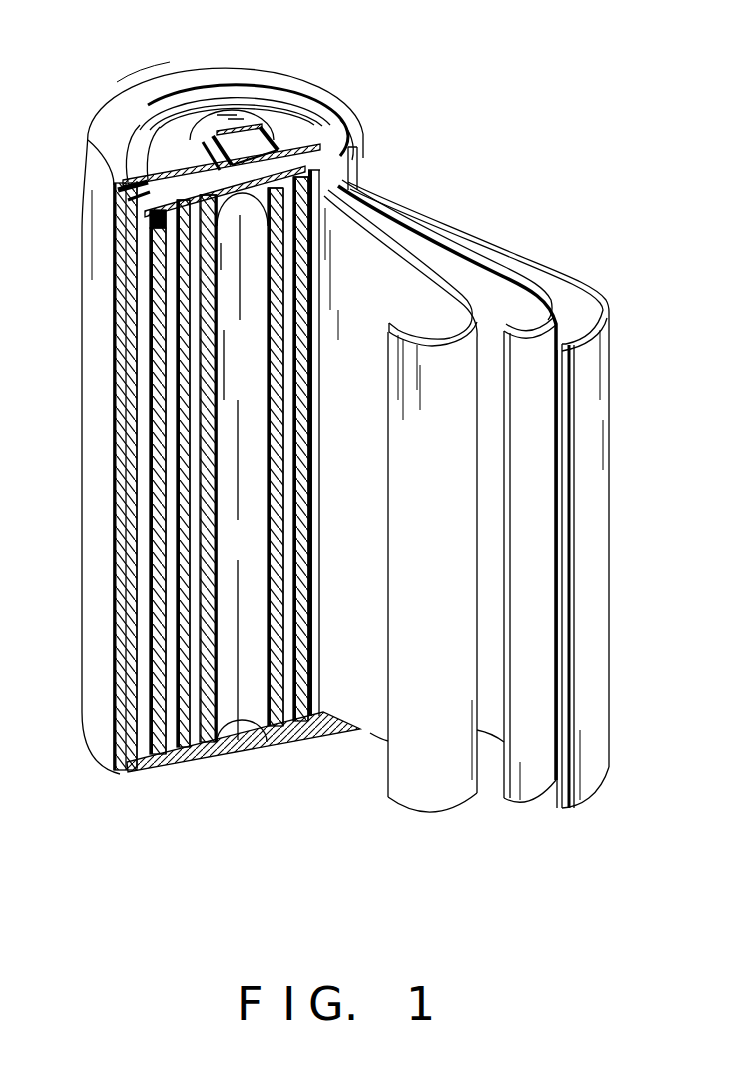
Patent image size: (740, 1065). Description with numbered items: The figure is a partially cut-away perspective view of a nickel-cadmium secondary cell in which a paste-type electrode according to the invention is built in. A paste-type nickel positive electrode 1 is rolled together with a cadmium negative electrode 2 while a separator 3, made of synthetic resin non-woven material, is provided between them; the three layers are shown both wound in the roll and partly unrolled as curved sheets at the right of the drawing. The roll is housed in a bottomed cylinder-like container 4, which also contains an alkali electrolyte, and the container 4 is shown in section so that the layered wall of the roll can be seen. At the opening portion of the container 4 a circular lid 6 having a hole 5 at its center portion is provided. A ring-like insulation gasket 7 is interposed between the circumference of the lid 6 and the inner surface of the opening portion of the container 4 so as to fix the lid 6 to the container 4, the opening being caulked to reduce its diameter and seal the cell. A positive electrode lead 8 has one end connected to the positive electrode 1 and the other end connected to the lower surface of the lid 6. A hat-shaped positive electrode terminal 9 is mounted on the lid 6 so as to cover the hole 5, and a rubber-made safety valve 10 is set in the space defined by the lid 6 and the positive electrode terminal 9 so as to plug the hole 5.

The paste-type nickel positive electrode 1 is at (431, 815).
The cadmium negative electrode 2 is at (590, 803).
The separator 3 is at (515, 803).
The bottomed cylinder-like container 4 is at (358, 158).
The hole 5 is at (290, 150).
The circular lid 6 is at (317, 140).
The ring-like insulation gasket 7 is at (353, 150).
The positive electrode lead 8 is at (170, 160).
The hat-shaped positive electrode terminal 9 is at (224, 150).
The rubber-made safety valve 10 is at (213, 145).